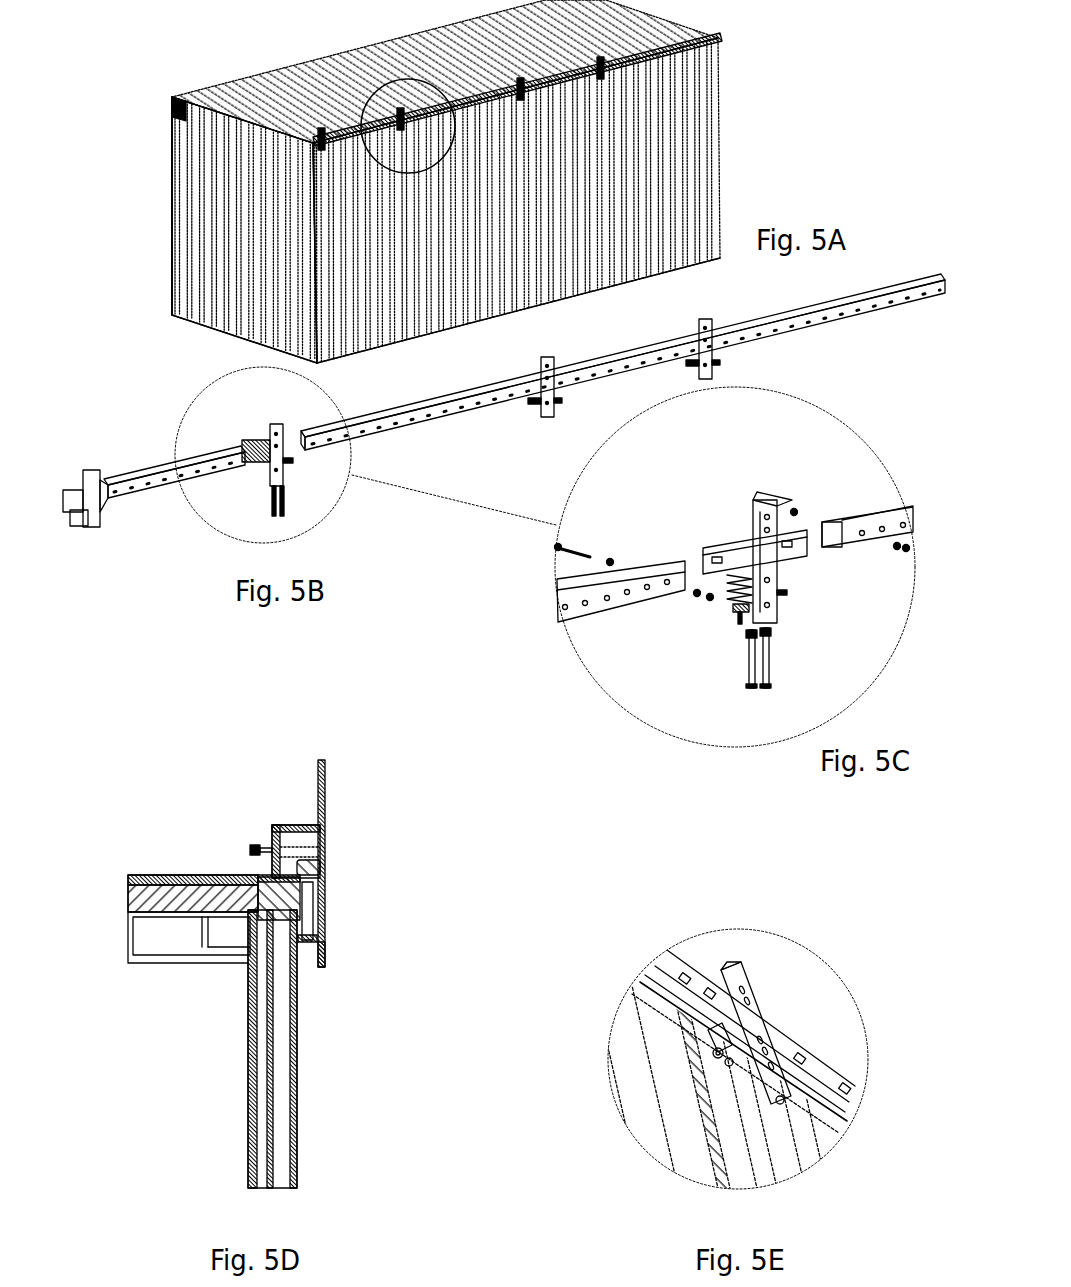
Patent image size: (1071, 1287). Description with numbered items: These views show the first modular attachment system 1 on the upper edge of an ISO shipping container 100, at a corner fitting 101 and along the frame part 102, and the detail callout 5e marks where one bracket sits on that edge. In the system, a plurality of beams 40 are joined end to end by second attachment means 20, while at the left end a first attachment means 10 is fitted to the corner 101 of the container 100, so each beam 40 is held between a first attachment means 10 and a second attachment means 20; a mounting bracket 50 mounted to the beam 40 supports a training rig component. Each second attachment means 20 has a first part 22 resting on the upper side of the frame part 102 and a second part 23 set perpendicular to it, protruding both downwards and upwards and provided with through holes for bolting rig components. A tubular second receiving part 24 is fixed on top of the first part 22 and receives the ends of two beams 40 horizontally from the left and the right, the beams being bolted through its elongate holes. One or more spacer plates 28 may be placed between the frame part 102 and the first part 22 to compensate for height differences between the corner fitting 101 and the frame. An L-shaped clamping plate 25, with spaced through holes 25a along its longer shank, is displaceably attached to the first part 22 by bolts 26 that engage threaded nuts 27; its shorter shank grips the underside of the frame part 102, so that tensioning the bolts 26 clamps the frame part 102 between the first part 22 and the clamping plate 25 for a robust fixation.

In FIG. 5B, the first modular attachment system 1 is at (88, 448).
In FIG. 5B, the first attachment means 10 is at (72, 545).
In FIG. 5B, the second attachment means 20 is at (286, 492).
In FIG. 5C, the second attachment means 20 is at (802, 578).
In FIG. 5D, the second attachment means 20 is at (257, 810).
In FIG. 5E, the second attachment means 20 is at (790, 1023).
In FIG. 5D, the first part 22 is at (258, 876).
In FIG. 5E, the first part 22 is at (712, 1030).
In FIG. 5D, the second part 23 is at (318, 962).
In FIG. 5C, the tubular second receiving part 24 is at (745, 540).
In FIG. 5C, the clamping plate 25 is at (733, 616).
In FIG. 5E, the clamping plate 25 is at (710, 1063).
In FIG. 5E, the through holes 25a is at (730, 1067).
In FIG. 5C, the bolt 26 is at (770, 655).
In FIG. 5D, the bolt 26 is at (305, 915).
In FIG. 5D, the threaded nut 27 is at (312, 864).
In FIG. 5C, the spacer plate 28 is at (702, 579).
In FIG. 5A, the beam 40 is at (737, 0).
In FIG. 5B, the beam 40 is at (157, 478).
In FIG. 5C, the beam 40 is at (893, 512).
In FIG. 5E, the beam 40 is at (655, 975).
In FIG. 5D, the mounting bracket 50 is at (318, 817).
In FIG. 5A, the detail view callout 5e is at (440, 163).
In FIG. 5A, the ISO shipping container 100 is at (683, 100).
In FIG. 5E, the ISO shipping container 100 is at (638, 1078).
In FIG. 5A, the corner fitting 101 is at (176, 102).
In FIG. 5D, the corner fitting 101 is at (292, 1133).
In FIG. 5A, the frame part 102 is at (178, 172).
In FIG. 5D, the frame part 102 is at (282, 922).
In FIG. 5E, the frame part 102 is at (752, 1097).